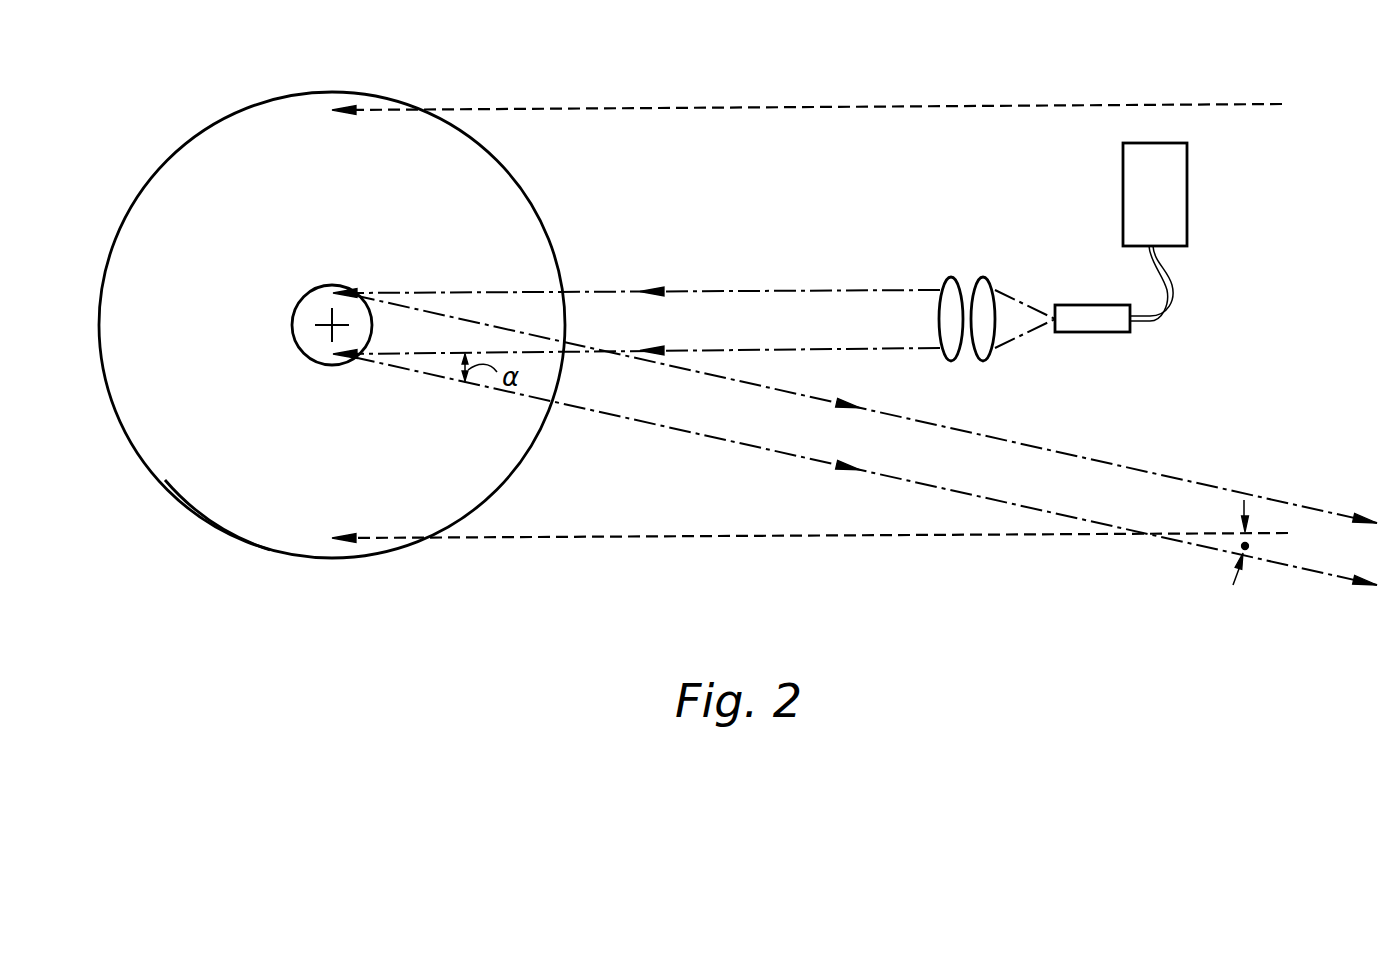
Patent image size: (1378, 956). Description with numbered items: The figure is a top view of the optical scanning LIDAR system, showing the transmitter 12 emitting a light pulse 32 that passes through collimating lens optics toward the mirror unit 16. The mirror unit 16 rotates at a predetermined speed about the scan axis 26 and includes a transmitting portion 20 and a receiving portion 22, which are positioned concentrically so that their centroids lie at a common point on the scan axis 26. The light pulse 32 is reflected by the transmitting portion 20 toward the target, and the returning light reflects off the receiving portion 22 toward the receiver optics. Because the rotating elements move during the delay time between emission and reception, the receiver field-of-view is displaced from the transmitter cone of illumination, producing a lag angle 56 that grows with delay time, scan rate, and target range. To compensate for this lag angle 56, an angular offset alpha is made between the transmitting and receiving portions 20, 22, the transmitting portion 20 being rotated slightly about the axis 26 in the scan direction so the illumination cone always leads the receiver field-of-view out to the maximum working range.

The transmitter 12 is at (1173, 180).
The mirror unit 16 is at (190, 116).
The transmitting portion 20 is at (312, 347).
The receiving portion 22 is at (203, 457).
The scan axis 26 is at (330, 322).
The light pulse 32 is at (777, 290).
The lag angle 56 is at (1250, 544).